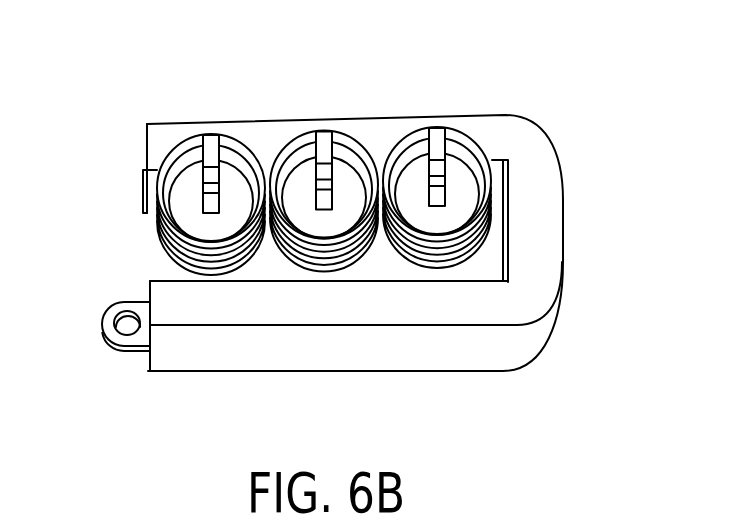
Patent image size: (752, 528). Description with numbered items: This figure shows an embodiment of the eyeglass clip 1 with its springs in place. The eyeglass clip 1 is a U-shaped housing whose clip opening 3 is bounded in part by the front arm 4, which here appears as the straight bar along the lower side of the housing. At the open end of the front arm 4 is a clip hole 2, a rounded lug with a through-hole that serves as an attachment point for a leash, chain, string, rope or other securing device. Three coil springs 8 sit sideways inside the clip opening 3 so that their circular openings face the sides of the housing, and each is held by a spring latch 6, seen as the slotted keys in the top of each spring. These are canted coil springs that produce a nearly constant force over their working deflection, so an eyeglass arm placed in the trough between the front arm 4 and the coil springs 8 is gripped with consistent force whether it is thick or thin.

The eyeglass clip 1 is at (560, 175).
The clip hole 2 is at (112, 352).
The clip opening 3 is at (122, 257).
The front arm 4 is at (298, 348).
The spring latches 6 is at (435, 138).
The coil springs 8 is at (478, 140).